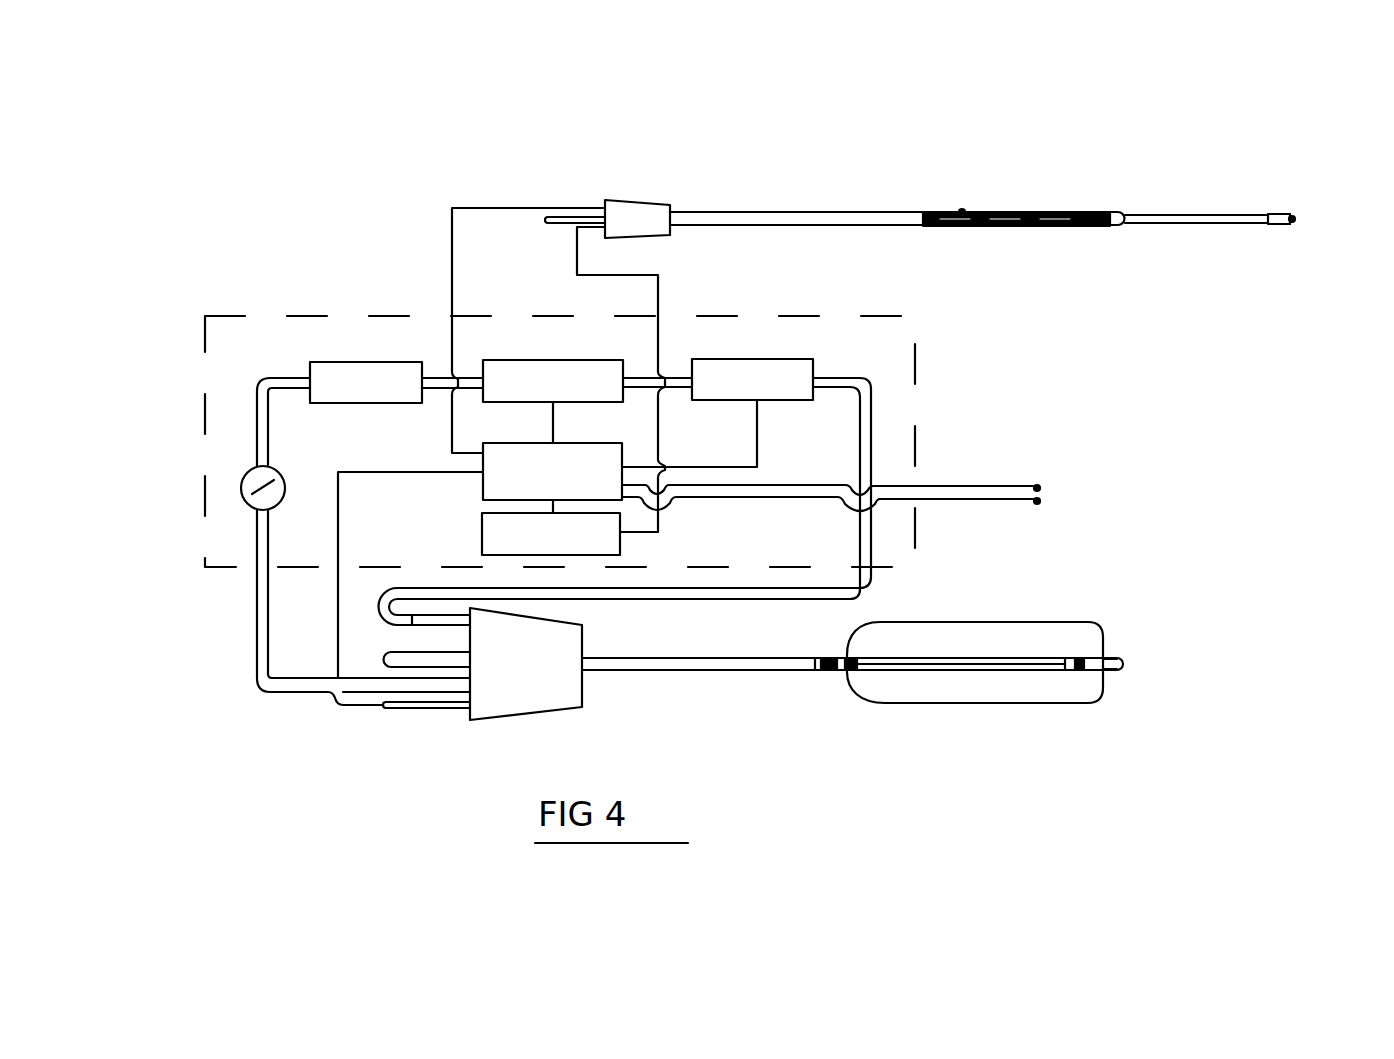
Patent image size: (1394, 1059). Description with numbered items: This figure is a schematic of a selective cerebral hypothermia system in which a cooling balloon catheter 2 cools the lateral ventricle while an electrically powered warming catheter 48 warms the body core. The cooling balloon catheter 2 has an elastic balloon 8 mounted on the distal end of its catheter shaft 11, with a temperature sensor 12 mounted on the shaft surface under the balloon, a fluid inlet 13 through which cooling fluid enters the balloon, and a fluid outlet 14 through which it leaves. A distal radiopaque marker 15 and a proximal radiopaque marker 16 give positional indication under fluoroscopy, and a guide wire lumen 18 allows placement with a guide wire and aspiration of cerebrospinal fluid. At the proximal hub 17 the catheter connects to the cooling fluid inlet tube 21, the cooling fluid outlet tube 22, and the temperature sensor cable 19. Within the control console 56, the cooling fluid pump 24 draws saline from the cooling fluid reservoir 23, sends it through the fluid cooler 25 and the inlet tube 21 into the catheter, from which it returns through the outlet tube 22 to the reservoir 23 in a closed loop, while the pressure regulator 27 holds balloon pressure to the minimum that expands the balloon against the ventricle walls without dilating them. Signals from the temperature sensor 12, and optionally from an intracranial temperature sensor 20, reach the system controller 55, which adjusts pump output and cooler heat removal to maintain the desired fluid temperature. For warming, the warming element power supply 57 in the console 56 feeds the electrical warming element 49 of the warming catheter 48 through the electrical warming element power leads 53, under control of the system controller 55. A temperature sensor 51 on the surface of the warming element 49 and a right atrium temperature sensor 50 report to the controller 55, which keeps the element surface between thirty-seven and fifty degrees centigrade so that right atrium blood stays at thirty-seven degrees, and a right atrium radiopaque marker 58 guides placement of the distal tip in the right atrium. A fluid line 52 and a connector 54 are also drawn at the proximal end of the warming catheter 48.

The cooling balloon catheter 2 is at (750, 658).
The elastic balloon 8 is at (1010, 622).
The catheter shaft 11 is at (667, 658).
The temperature sensor 12 is at (973, 663).
The fluid inlet 13 is at (1067, 660).
The fluid outlet 14 is at (857, 665).
The distal radiopaque marker 15 is at (1082, 660).
The proximal radiopaque marker 16 is at (828, 673).
The proximal hub 17 is at (582, 690).
The guide wire lumen 18 is at (462, 668).
The temperature sensor cable 19 is at (420, 708).
The intracranial temperature sensor 20 is at (1040, 488).
The cooling fluid inlet tube 21 is at (413, 623).
The cooling fluid outlet tube 22 is at (300, 695).
The cooling fluid reservoir 23 is at (352, 362).
The cooling fluid pump 24 is at (600, 362).
The fluid cooler 25 is at (813, 359).
The pressure regulator 27 is at (250, 505).
The warming catheter 48 is at (790, 212).
The electrical warming element 49 is at (985, 212).
The right atrium temperature sensor 50 is at (1290, 214).
The temperature sensor 51 is at (962, 212).
The fluid line 52 is at (490, 208).
The electrical warming element power leads 53 is at (660, 283).
The connector 54 is at (570, 215).
The system controller 55 is at (622, 457).
The control console 56 is at (915, 333).
The warming element power supply 57 is at (620, 548).
The right atrium radiopaque marker 58 is at (1268, 214).